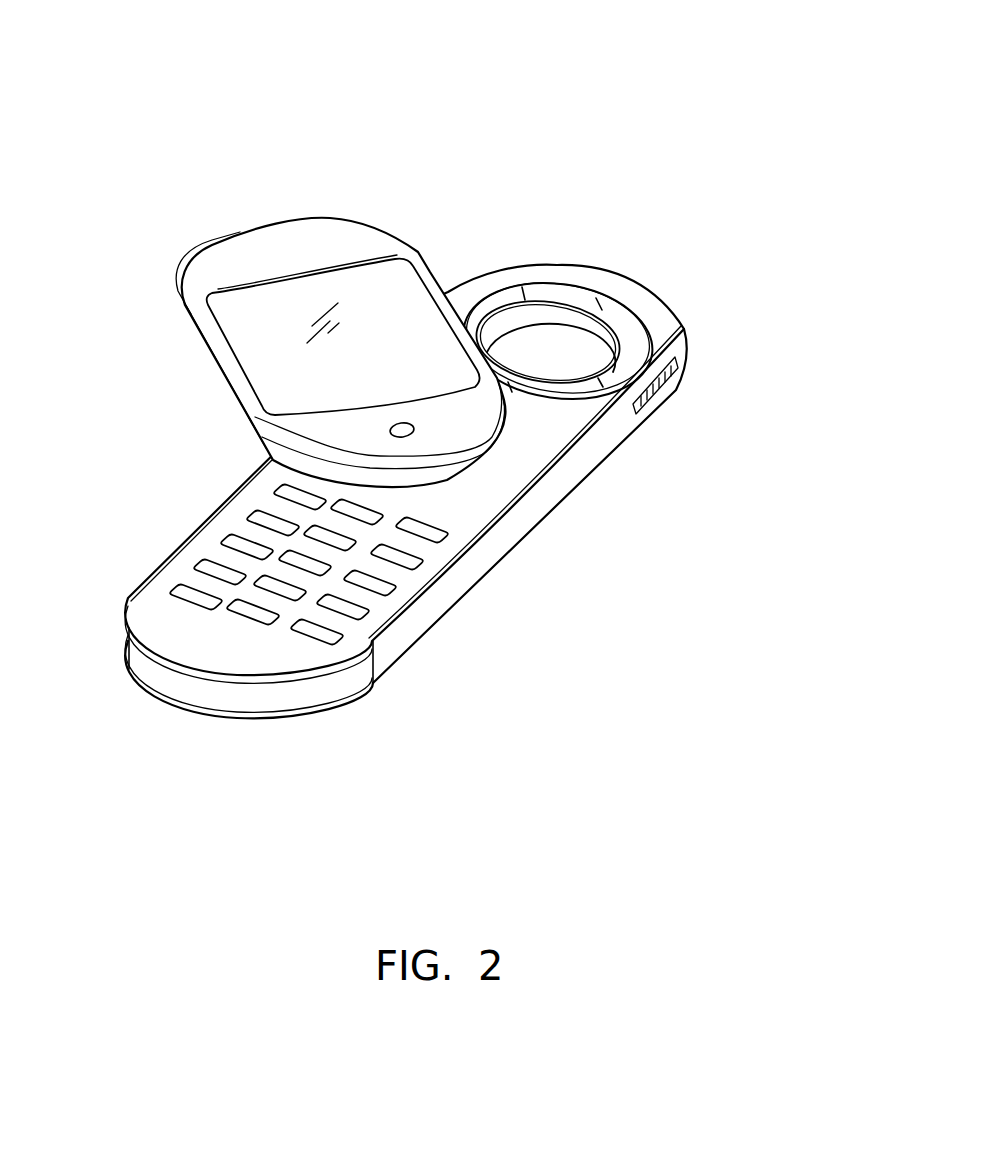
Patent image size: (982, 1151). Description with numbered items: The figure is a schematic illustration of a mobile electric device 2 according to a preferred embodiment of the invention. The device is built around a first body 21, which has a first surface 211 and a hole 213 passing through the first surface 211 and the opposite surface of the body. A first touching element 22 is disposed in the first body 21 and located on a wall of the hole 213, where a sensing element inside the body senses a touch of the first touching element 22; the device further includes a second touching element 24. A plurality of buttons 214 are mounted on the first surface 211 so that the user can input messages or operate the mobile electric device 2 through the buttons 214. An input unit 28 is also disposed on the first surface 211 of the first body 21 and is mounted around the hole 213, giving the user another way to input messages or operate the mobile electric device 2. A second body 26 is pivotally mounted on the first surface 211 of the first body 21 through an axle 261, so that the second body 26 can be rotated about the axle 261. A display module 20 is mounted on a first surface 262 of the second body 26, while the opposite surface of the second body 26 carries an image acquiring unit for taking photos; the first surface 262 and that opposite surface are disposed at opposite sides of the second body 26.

The mobile electric device 2 is at (136, 34).
The display module 20 is at (267, 311).
The first body 21 is at (437, 613).
The first surface 211 is at (257, 657).
The hole 213 is at (550, 366).
The buttons 214 is at (203, 568).
The first touching element 22 is at (557, 323).
The second touching element 24 is at (677, 387).
The second body 26 is at (324, 232).
The axle 261 is at (414, 432).
The first surface of the second body 262 is at (233, 360).
The input unit 28 is at (593, 300).